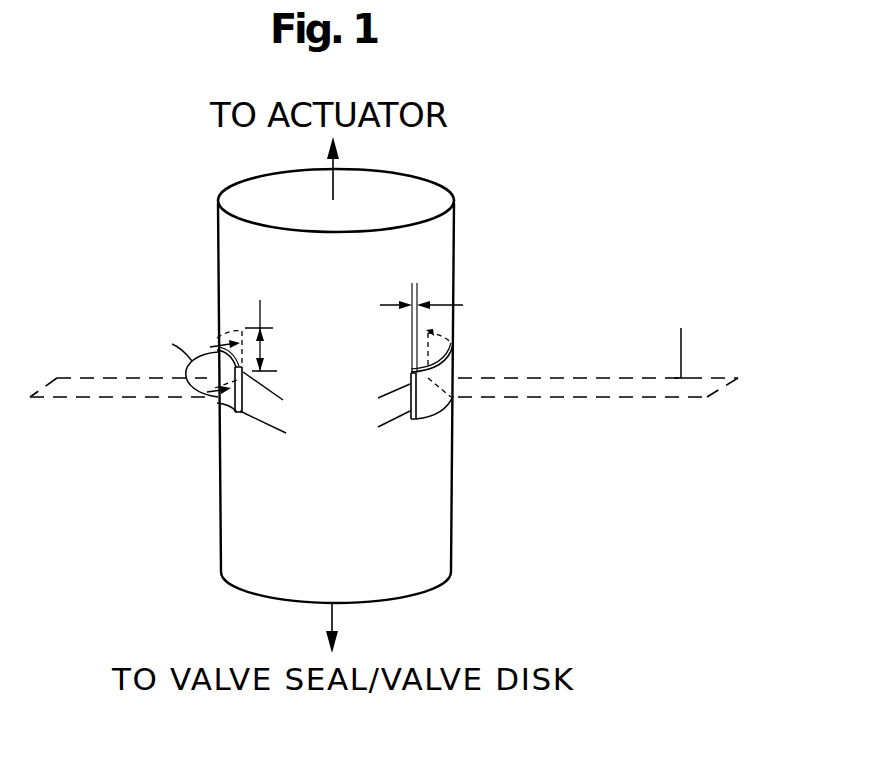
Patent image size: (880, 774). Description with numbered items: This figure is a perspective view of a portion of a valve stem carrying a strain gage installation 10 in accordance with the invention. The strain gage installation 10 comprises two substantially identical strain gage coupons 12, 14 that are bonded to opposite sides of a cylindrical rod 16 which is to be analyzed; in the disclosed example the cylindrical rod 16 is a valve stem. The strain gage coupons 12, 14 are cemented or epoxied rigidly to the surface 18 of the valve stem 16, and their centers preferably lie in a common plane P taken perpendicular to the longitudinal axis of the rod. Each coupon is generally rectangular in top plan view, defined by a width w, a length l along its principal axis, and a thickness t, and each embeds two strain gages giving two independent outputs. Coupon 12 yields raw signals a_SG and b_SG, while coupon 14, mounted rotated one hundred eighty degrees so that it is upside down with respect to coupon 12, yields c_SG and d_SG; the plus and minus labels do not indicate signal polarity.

The strain gage installation 10 is at (137, 257).
The strain gage coupon 12 is at (210, 397).
The strain gage coupon 14 is at (453, 398).
The cylindrical rod 16 is at (453, 240).
The surface 18 is at (453, 330).